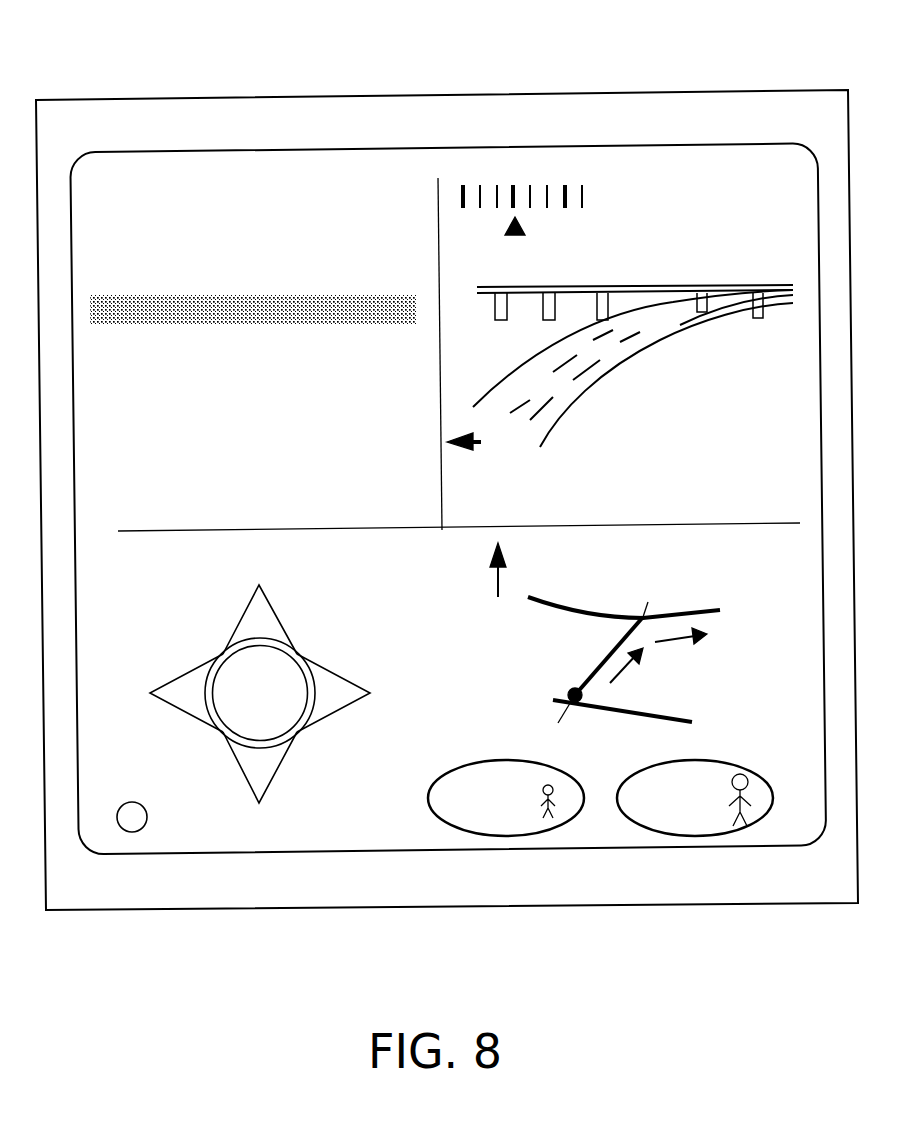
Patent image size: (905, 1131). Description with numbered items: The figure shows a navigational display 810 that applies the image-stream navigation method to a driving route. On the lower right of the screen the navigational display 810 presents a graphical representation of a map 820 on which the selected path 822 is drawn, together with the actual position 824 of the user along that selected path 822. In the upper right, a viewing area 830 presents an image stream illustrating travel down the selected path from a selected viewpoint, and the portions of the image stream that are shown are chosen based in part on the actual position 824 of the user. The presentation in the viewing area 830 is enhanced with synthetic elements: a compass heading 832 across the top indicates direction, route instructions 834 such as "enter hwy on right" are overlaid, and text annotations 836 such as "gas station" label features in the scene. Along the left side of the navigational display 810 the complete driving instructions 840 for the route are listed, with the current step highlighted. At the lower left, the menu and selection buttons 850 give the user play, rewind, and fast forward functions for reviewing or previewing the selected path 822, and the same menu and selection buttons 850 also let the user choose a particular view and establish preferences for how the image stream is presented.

The navigational display 810 is at (102, 36).
The map 820 is at (466, 655).
The selected path 822 is at (670, 708).
The actual position 824 is at (572, 692).
The viewing area 830 is at (700, 217).
The compass heading 832 is at (540, 162).
The route instructions 834 is at (717, 455).
The text annotations 836 is at (512, 467).
The complete driving instructions 840 is at (338, 177).
The menu and selection buttons 850 is at (302, 623).